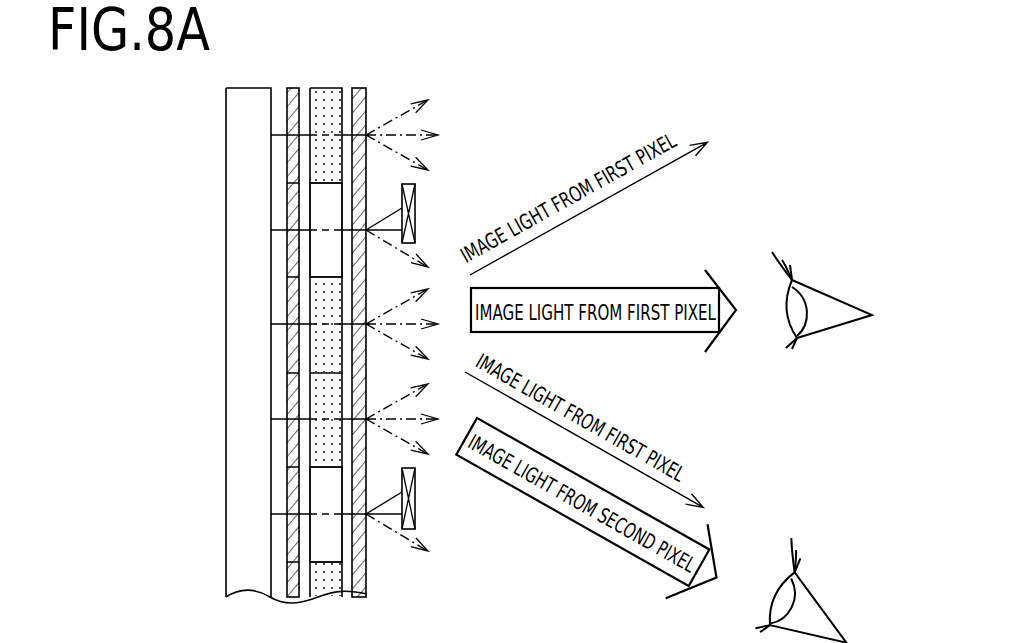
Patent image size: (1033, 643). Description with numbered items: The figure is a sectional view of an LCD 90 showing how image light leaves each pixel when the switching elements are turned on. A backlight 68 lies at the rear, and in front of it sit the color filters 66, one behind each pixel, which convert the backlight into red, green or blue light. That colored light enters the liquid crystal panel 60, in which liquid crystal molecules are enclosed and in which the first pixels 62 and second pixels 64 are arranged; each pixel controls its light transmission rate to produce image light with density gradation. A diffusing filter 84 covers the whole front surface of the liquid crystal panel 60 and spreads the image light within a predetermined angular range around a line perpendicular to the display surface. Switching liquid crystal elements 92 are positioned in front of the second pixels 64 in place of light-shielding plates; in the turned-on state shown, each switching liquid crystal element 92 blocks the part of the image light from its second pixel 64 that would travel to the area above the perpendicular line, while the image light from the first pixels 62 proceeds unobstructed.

The liquid crystal panel 60 is at (338, 66).
The first pixels 62 is at (313, 88).
The second pixels 64 is at (338, 266).
The color filters 66 is at (287, 96).
The backlight 68 is at (235, 88).
The diffusing filter 84 is at (358, 89).
The LCD 90 is at (452, 52).
The switching liquid crystal elements 92 is at (417, 212).